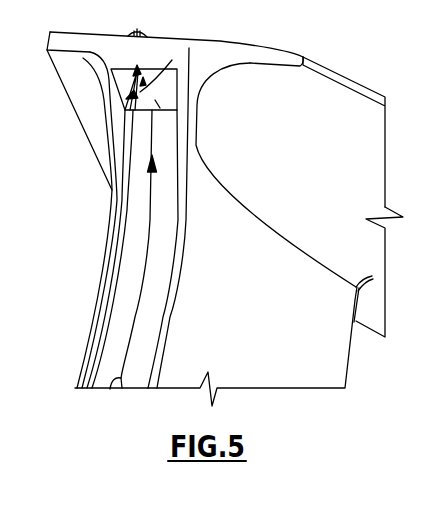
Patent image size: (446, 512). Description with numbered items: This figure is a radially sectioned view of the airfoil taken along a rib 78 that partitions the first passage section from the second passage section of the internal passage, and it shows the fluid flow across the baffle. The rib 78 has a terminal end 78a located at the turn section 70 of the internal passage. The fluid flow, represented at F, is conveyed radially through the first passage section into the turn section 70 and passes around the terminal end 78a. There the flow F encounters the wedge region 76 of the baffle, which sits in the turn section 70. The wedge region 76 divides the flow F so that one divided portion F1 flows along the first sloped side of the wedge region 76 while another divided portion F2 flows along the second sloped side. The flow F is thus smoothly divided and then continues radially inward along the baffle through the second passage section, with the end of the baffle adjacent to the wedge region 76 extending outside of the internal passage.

The turn section 70 is at (160, 68).
The wedge region 76 is at (168, 100).
The rib 78 is at (122, 290).
The terminal end 78a is at (130, 148).
The fluid flow F is at (110, 389).
The divided portion F1 is at (160, 108).
The divided portion F2 is at (172, 60).